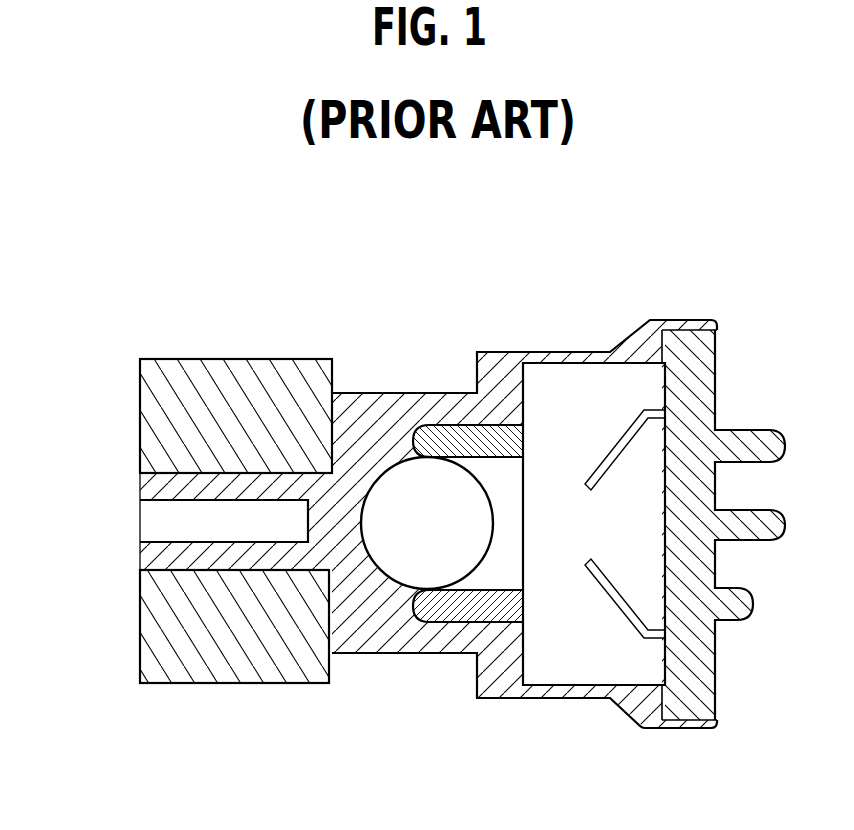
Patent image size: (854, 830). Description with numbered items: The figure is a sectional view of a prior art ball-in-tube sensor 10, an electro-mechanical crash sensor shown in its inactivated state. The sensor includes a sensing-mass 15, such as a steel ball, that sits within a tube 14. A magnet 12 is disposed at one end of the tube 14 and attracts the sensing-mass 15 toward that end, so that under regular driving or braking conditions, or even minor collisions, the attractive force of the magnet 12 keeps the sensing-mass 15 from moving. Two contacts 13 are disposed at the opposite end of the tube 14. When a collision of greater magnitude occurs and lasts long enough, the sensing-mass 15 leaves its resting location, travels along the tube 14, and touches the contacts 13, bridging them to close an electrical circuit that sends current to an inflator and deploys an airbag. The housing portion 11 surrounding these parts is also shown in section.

The ball-in-tube sensor 10 is at (122, 331).
The housing 11 is at (372, 393).
The magnet 12 is at (217, 358).
The contact 13 is at (598, 470).
The tube 14 is at (467, 425).
The sensing-mass 15 is at (400, 570).